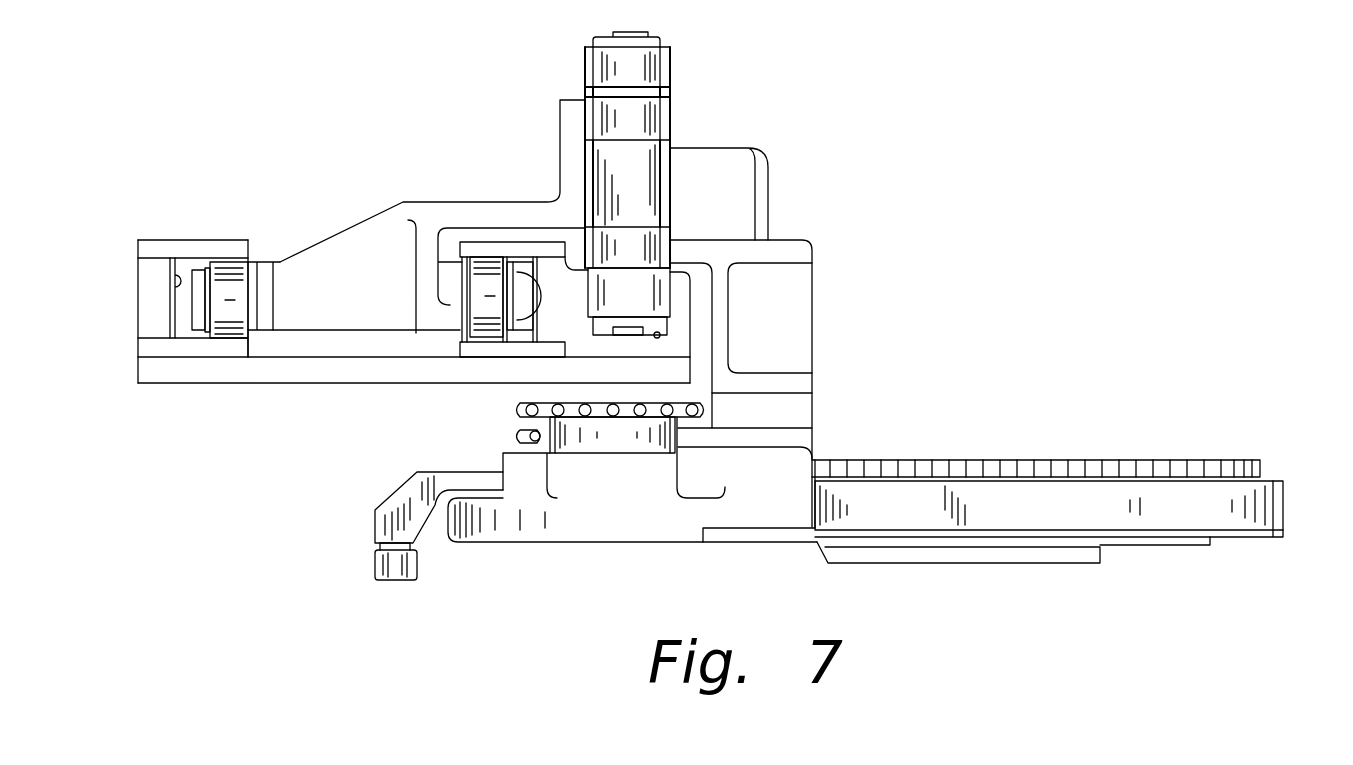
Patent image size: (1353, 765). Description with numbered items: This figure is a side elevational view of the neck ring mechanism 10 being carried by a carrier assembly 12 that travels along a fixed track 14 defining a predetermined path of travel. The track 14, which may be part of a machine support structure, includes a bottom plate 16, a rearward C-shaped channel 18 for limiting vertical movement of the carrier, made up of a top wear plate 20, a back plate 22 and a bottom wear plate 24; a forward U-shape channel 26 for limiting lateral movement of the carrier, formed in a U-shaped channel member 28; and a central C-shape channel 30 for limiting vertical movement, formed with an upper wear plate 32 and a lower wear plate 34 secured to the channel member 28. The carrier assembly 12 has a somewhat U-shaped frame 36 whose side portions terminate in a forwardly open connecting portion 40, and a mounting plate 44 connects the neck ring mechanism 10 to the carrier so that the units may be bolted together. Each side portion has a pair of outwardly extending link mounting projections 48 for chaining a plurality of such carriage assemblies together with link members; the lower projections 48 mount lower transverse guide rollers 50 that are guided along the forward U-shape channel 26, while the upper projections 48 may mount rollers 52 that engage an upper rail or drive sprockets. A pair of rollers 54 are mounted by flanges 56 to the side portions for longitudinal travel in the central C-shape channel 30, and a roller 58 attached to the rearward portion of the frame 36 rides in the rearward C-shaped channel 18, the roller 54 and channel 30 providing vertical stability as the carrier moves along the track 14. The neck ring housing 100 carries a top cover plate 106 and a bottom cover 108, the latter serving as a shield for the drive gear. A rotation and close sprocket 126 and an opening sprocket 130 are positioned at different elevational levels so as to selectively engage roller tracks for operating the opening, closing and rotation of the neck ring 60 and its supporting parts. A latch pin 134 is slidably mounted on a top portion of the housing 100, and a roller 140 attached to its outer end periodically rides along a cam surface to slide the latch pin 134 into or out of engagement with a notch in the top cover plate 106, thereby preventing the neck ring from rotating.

The neck ring mechanism 10 is at (1072, 460).
The carrier assembly 12 is at (768, 165).
The fixed track 14 is at (283, 384).
The bottom plate 16 is at (160, 375).
The rearward C-shaped channel 18 is at (180, 273).
The top wear plate 20 is at (190, 240).
The back plate 22 is at (147, 307).
The bottom wear plate 24 is at (207, 347).
The forward U-shape channel 26 is at (664, 343).
The U-shaped channel member 28 is at (625, 348).
The central C-shape channel 30 is at (530, 334).
The upper wear plate 32 is at (512, 250).
The lower wear plate 34 is at (495, 352).
The U-shaped frame 36 is at (354, 226).
The forwardly open connecting portion 40 is at (795, 320).
The mounting plate 44 is at (795, 412).
The link mounting projections 48 is at (652, 118).
The lower transverse guide rollers 50 is at (642, 306).
The rollers 52 is at (660, 70).
The rollers 54 is at (482, 302).
The flanges 56 is at (420, 263).
The roller 58 is at (235, 290).
The neck ring 60 is at (1048, 563).
The neck ring housing 100 is at (1275, 507).
The top cover plate 106 is at (1218, 462).
The bottom cover 108 is at (1168, 533).
The rotation and close sprocket 126 is at (513, 410).
The opening sprocket 130 is at (513, 437).
The latch pin 134 is at (397, 507).
The roller 140 is at (375, 566).